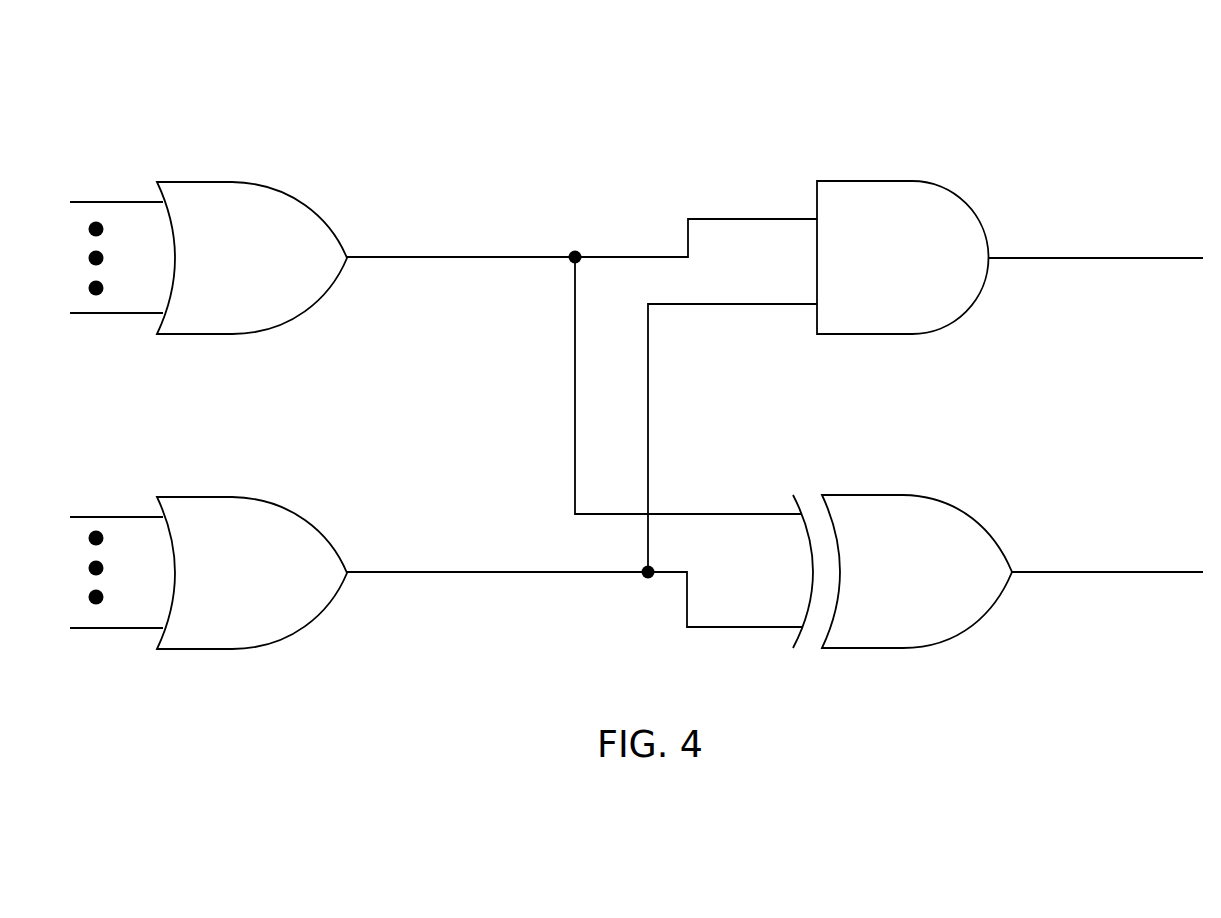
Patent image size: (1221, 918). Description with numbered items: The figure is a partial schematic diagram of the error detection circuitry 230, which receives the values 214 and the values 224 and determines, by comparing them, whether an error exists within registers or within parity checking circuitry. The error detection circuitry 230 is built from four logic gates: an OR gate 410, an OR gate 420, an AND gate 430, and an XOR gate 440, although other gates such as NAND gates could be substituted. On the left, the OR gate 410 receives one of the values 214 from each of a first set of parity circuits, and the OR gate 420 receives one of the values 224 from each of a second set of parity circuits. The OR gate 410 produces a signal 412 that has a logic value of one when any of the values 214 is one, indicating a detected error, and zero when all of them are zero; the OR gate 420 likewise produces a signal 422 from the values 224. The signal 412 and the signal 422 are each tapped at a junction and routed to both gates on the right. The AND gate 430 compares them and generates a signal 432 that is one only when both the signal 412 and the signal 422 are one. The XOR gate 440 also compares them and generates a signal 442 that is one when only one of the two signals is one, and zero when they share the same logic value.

The error detection circuitry 230 is at (970, 89).
The values 214 is at (116, 261).
The values 224 is at (116, 576).
The OR gate 410 is at (265, 270).
The signal 412 is at (582, 366).
The OR gate 420 is at (265, 585).
The signal 422 is at (582, 465).
The AND gate 430 is at (915, 270).
The signal 432 is at (1095, 240).
The XOR gate 440 is at (929, 585).
The signal 442 is at (1107, 554).